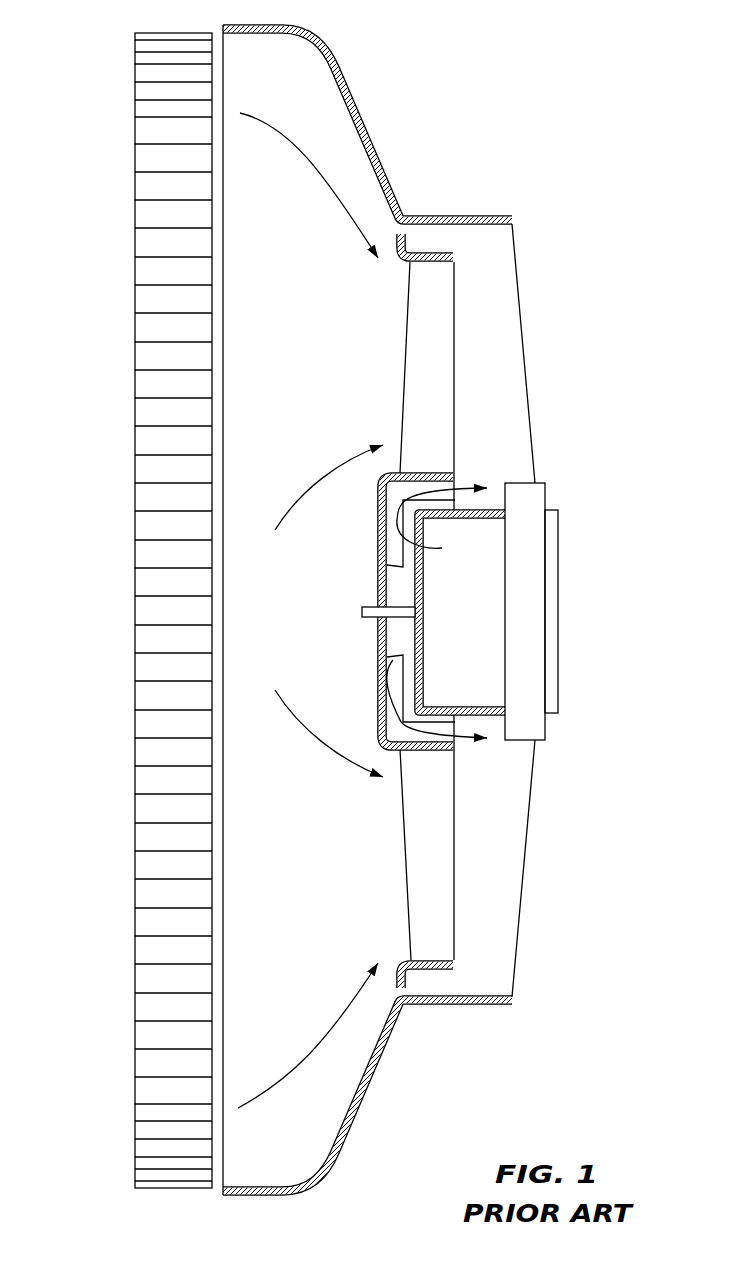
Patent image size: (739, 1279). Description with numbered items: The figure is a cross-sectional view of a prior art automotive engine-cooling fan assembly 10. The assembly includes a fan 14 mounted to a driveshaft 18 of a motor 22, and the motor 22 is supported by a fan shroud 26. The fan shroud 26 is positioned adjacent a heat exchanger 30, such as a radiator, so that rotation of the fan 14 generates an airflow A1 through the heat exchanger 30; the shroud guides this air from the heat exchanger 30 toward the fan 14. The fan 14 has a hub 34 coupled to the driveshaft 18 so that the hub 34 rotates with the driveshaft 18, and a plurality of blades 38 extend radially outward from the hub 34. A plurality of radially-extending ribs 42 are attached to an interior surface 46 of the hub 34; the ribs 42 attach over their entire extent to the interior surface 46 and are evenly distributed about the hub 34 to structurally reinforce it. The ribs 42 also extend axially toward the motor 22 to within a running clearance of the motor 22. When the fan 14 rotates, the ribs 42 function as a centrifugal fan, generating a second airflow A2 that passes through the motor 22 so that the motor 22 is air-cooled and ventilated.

The fan assembly 10 is at (548, 64).
The fan 14 is at (496, 327).
The driveshaft 18 is at (362, 611).
The motor 22 is at (485, 572).
The fan shroud 26 is at (335, 60).
The heat exchanger 30 is at (148, 134).
The hub 34 is at (378, 544).
The blades 38 is at (413, 355).
The ribs 42 is at (390, 570).
The interior surface 46 is at (442, 673).
The airflow A1 is at (331, 212).
The airflow A2 is at (466, 478).